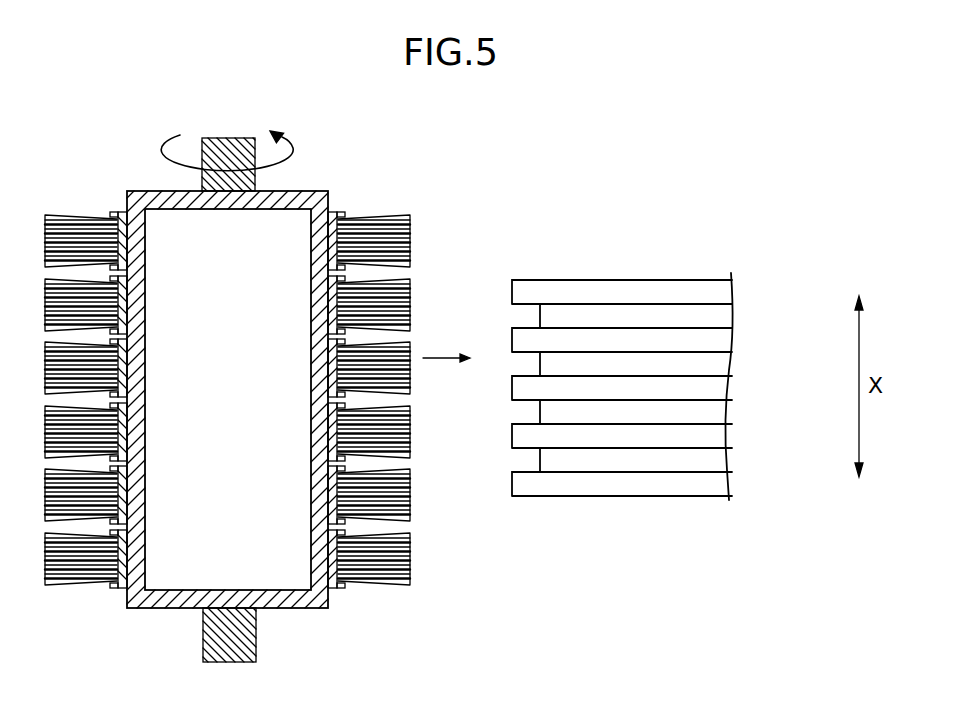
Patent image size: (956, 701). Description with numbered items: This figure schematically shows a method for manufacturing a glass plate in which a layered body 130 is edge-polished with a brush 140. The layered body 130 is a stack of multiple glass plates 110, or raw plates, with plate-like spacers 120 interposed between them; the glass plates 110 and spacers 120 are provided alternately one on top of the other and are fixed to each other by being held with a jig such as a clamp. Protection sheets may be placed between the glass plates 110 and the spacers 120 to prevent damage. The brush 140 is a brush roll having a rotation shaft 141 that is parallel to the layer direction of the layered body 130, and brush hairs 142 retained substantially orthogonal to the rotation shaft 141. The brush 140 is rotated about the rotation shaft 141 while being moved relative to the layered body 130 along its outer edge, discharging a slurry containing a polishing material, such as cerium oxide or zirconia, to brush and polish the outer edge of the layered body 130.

The brush 140 is at (113, 184).
The rotation shaft 141 is at (287, 612).
The brush hairs 142 is at (387, 214).
The layered body 130 is at (600, 242).
The glass plate 110 is at (516, 484).
The spacer 120 is at (717, 458).